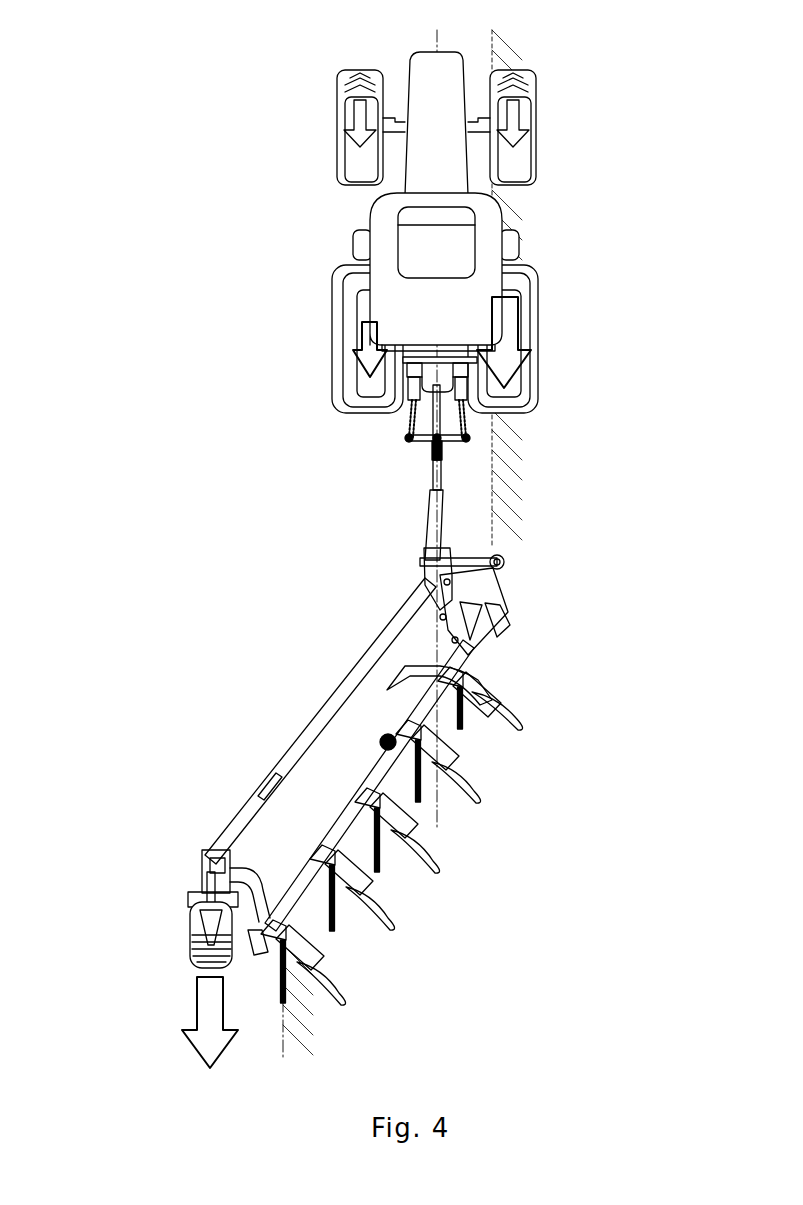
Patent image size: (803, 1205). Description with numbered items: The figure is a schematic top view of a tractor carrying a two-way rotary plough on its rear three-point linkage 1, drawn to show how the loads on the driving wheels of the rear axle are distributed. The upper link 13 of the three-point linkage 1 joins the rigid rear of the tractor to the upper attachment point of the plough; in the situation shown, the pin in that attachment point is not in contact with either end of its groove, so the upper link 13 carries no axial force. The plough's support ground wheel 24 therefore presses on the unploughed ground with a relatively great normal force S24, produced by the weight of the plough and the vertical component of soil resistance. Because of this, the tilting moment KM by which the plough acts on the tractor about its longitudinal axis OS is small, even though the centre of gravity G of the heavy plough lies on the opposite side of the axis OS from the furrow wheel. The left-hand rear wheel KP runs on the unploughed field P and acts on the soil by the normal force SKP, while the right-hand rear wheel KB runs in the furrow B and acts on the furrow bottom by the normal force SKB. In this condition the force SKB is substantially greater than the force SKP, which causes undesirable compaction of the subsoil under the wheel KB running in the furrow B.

The three-point linkage 1 is at (435, 306).
The upper link 13 is at (440, 420).
The support ground wheel 24 is at (190, 940).
The normal force of the support ground wheel S24 is at (205, 1007).
The centre of gravity of the plough G is at (373, 723).
The tilting moment KM is at (398, 675).
The right-hand rear wheel KB is at (537, 374).
The left-hand rear wheel KP is at (338, 370).
The normal force of the right-hand rear wheel SKB is at (505, 340).
The normal force of the left-hand rear wheel SKP is at (362, 378).
The longitudinal axis of the tractor OS is at (437, 173).
The unploughed field P is at (363, 545).
The furrow B is at (416, 545).